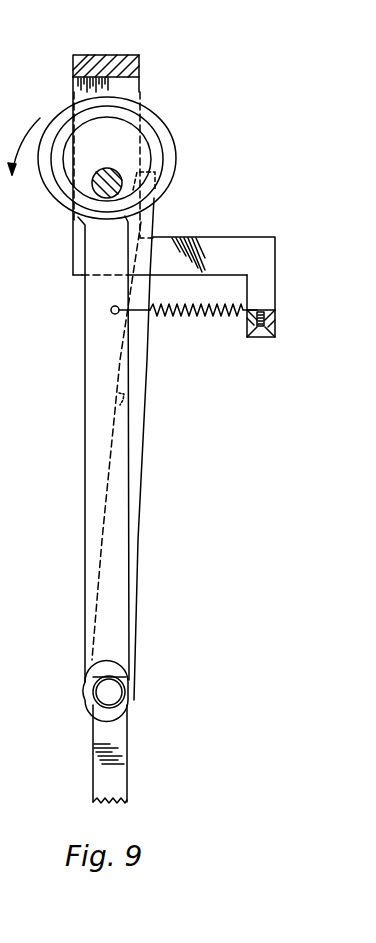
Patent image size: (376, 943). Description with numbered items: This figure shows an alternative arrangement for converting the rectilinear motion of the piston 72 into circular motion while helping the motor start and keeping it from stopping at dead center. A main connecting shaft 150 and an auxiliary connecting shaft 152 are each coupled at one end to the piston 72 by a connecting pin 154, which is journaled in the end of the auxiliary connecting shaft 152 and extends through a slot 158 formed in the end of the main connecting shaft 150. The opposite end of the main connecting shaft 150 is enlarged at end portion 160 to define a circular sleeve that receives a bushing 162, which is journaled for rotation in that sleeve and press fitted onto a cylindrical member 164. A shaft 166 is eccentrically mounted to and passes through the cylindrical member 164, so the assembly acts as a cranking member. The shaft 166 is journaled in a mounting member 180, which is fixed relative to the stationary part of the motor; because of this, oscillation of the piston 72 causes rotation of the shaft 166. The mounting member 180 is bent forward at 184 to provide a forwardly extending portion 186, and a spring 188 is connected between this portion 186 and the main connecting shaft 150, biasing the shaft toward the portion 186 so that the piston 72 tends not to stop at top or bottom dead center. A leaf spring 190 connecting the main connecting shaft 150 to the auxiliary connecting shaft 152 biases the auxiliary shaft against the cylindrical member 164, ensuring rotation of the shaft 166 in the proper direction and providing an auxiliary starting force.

The piston 72 is at (128, 740).
The main connecting shaft 150 is at (85, 448).
The auxiliary connecting shaft 152 is at (146, 459).
The connecting pin 154 is at (113, 695).
The slot 158 is at (118, 672).
The enlarged end portion 160 is at (158, 116).
The bushing 162 is at (72, 120).
The cylindrical member 164 is at (68, 182).
The shaft 166 is at (120, 147).
The mounting member 180 is at (138, 69).
The bend 184 is at (242, 212).
The forwardly extending portion 186 is at (268, 334).
The spring 188 is at (180, 319).
The leaf spring 190 is at (130, 418).